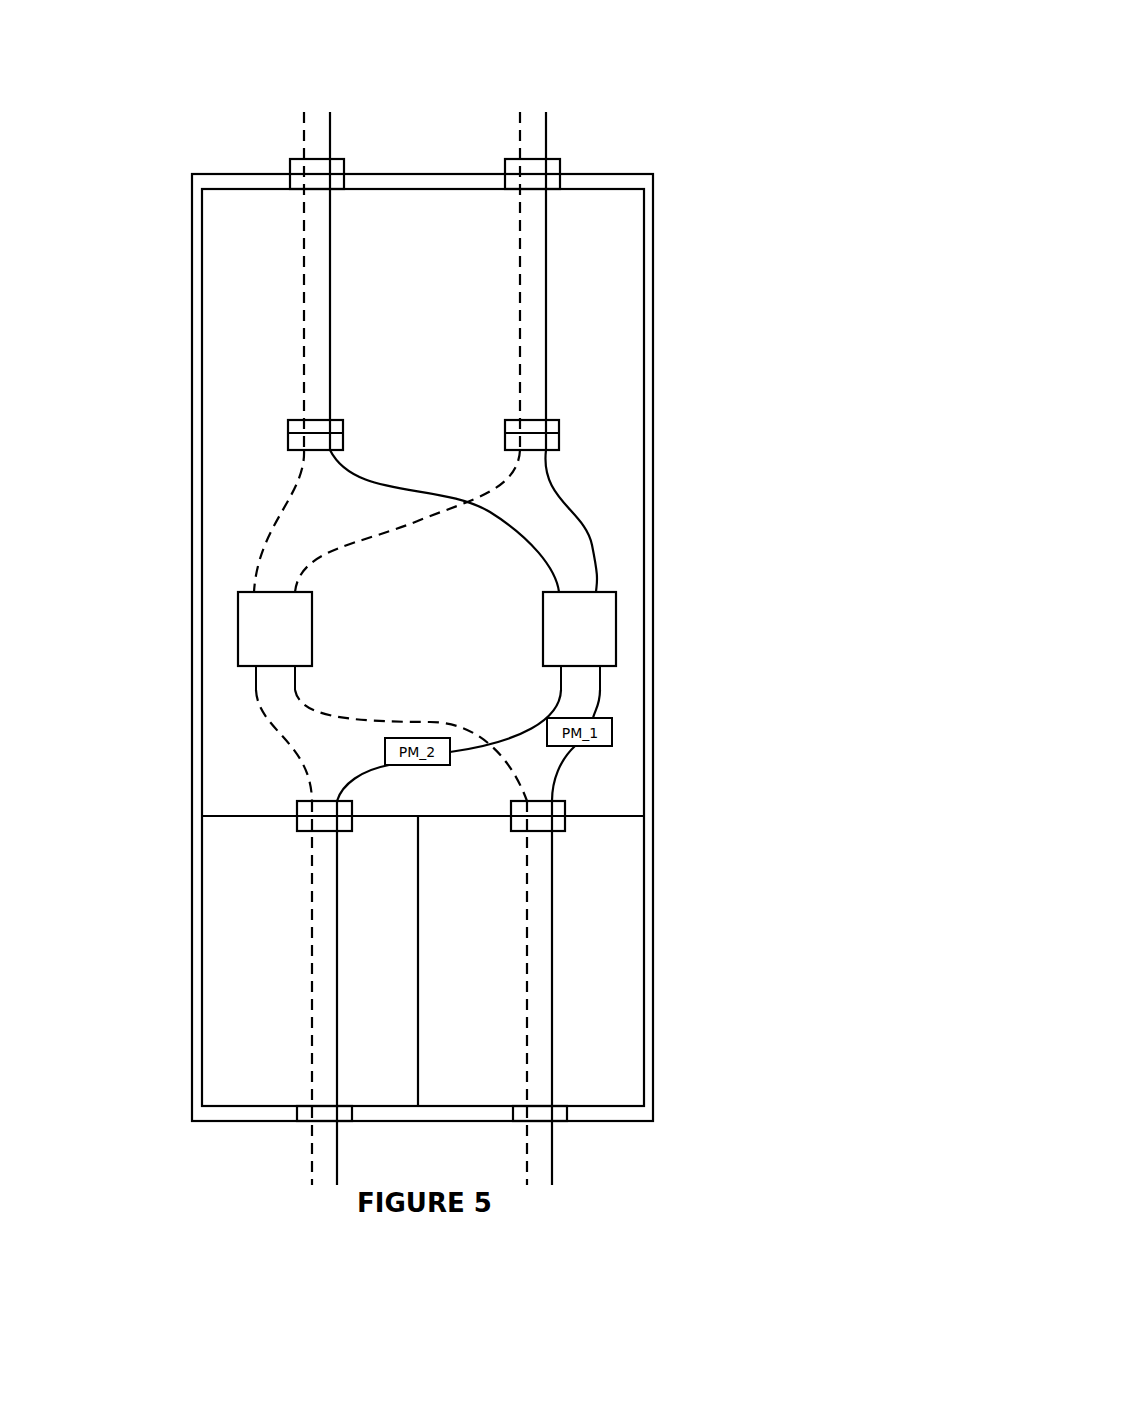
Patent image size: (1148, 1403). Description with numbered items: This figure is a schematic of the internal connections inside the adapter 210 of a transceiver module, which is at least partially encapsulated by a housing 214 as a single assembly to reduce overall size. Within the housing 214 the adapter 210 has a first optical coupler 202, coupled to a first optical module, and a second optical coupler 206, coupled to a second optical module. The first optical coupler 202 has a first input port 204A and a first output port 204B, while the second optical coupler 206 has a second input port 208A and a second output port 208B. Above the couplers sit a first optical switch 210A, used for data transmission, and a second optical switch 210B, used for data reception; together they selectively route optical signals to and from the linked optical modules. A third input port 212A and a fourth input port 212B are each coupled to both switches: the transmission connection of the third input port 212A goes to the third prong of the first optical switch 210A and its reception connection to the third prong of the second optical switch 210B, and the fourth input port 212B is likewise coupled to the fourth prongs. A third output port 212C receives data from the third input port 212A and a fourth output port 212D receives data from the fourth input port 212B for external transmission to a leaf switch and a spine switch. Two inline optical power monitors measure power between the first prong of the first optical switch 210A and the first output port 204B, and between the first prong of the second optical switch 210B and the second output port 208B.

The adapter 210 is at (774, 70).
The housing 214 is at (655, 574).
The second optical coupler 206 is at (423, 904).
The first optical coupler 202 is at (455, 961).
The fourth output port 212D is at (289, 173).
The third output port 212C is at (562, 158).
The fourth input port 212B is at (287, 439).
The third input port 212A is at (548, 419).
The second output port 208B is at (296, 830).
The second input port 208A is at (296, 1106).
The first output port 204B is at (565, 830).
The first input port 204A is at (564, 1105).
The second optical switch 210B is at (275, 632).
The first optical switch 210A is at (579, 632).